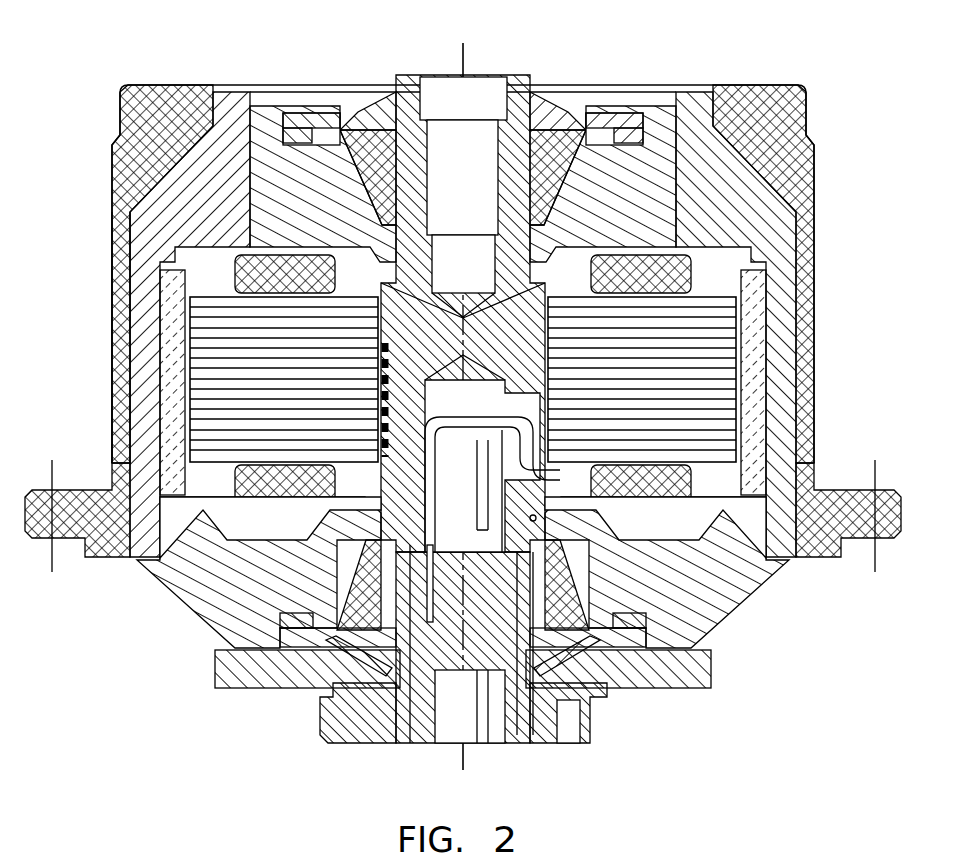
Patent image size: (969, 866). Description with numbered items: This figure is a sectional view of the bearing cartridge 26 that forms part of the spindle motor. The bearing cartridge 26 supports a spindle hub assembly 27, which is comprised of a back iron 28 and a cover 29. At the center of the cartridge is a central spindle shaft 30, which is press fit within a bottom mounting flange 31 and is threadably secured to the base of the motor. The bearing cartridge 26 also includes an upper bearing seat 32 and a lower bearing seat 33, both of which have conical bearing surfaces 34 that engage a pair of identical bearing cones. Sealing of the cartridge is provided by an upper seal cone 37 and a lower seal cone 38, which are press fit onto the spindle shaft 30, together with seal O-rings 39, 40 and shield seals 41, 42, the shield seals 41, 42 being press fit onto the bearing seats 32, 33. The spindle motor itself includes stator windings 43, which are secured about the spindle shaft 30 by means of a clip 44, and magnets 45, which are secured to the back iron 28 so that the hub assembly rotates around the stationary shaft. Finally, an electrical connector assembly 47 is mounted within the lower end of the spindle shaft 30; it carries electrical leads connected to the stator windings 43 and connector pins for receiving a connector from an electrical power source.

The bearing cartridge 26 is at (256, 75).
The spindle hub assembly 27 is at (95, 186).
The back iron 28 is at (143, 307).
The cover 29 is at (118, 368).
The central spindle shaft 30 is at (423, 98).
The bottom mounting flange 31 is at (673, 673).
The upper bearing seat 32 is at (660, 130).
The lower bearing seat 33 is at (708, 585).
The conical bearing surfaces 34 is at (345, 590).
The upper seal cone 37 is at (372, 120).
The lower seal cone 38 is at (607, 680).
The seal O-ring 39 is at (623, 127).
The seal O-ring 40 is at (250, 683).
The shield seal 41 is at (300, 125).
The shield seal 42 is at (305, 640).
The stator windings 43 is at (233, 437).
The clip 44 is at (383, 398).
The magnets 45 is at (168, 388).
The electrical connector assembly 47 is at (508, 762).